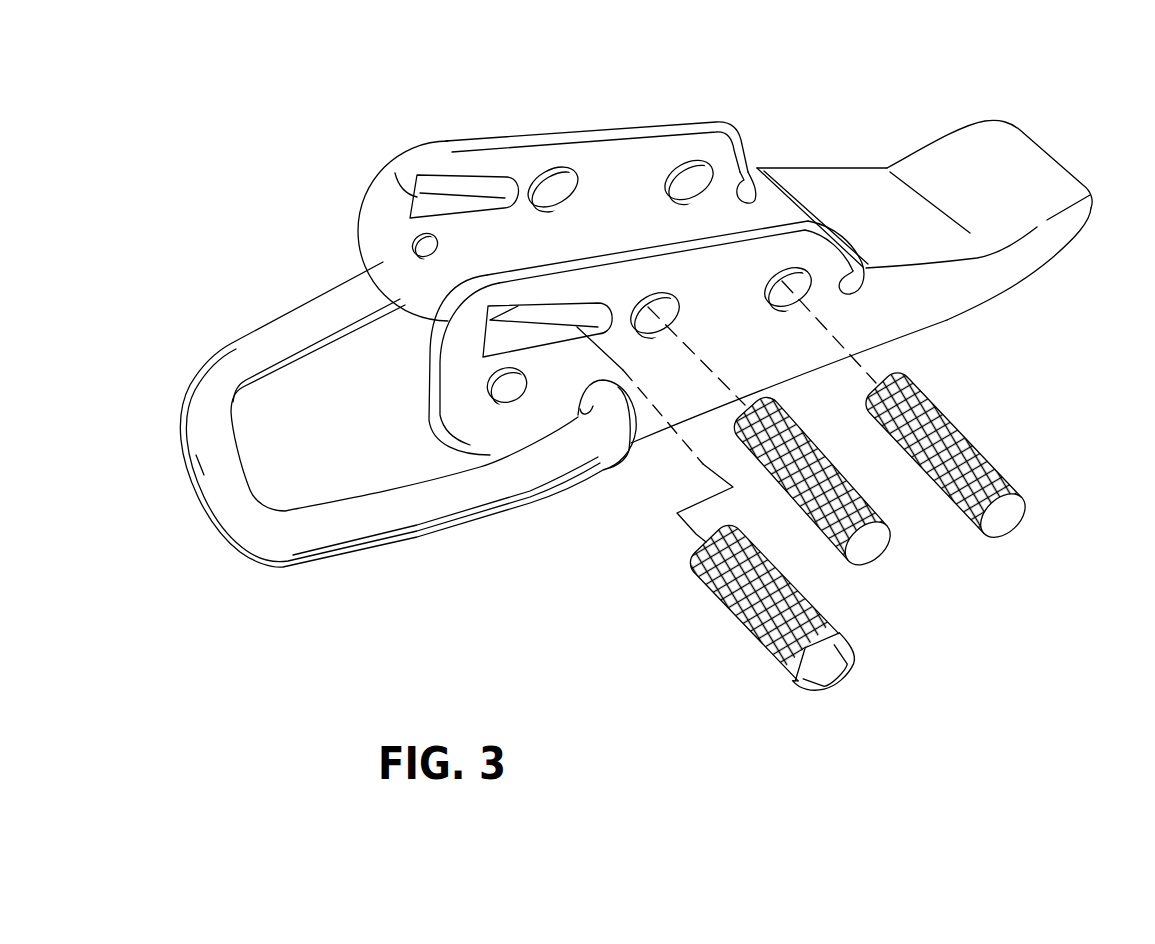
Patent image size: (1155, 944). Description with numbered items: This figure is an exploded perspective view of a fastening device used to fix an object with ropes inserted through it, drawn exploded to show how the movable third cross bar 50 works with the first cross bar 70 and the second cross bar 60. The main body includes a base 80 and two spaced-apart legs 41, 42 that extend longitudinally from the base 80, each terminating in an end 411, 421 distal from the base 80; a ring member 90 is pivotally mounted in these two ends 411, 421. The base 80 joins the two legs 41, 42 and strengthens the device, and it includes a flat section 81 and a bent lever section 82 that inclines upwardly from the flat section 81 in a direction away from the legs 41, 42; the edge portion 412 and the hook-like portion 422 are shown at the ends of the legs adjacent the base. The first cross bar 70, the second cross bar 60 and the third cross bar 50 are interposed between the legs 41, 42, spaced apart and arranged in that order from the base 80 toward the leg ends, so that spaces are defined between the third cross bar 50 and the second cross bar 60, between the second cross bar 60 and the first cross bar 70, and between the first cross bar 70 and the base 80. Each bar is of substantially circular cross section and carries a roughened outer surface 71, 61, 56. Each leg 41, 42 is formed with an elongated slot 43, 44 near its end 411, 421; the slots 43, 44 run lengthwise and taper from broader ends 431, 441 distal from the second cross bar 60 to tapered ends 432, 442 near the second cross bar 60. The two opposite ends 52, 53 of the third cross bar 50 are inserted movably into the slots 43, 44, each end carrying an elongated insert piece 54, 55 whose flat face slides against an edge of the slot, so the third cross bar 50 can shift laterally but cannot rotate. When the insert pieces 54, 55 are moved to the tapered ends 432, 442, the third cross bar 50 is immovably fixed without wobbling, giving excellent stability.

The leg 41 is at (647, 425).
The end of leg 411 is at (467, 417).
The edge portion of base plate 412 is at (940, 310).
The leg 42 is at (596, 183).
The end of leg 421 is at (430, 163).
The hook portion of upper plate 422 is at (820, 167).
The elongated slot 43 is at (636, 408).
The broader end of slot 431 is at (428, 442).
The tapered end of slot 432 is at (614, 326).
The elongated slot 44 is at (477, 174).
The broader end of slot 441 is at (396, 172).
The tapered end of slot 442 is at (520, 175).
The third cross bar 50 is at (767, 654).
The end of third cross bar 52 is at (793, 684).
The end of third cross bar 53 is at (699, 577).
The insert piece 54 is at (830, 670).
The insert piece 55 is at (690, 556).
The roughened outer surface 56 is at (817, 607).
The second cross bar 60 is at (842, 492).
The roughened outer surface 61 is at (880, 513).
The first cross bar 70 is at (978, 456).
The roughened outer surface 71 is at (984, 460).
The base 80 is at (931, 157).
The flat section 81 is at (860, 183).
The bent lever section 82 is at (1038, 163).
The ring member 90 is at (237, 553).